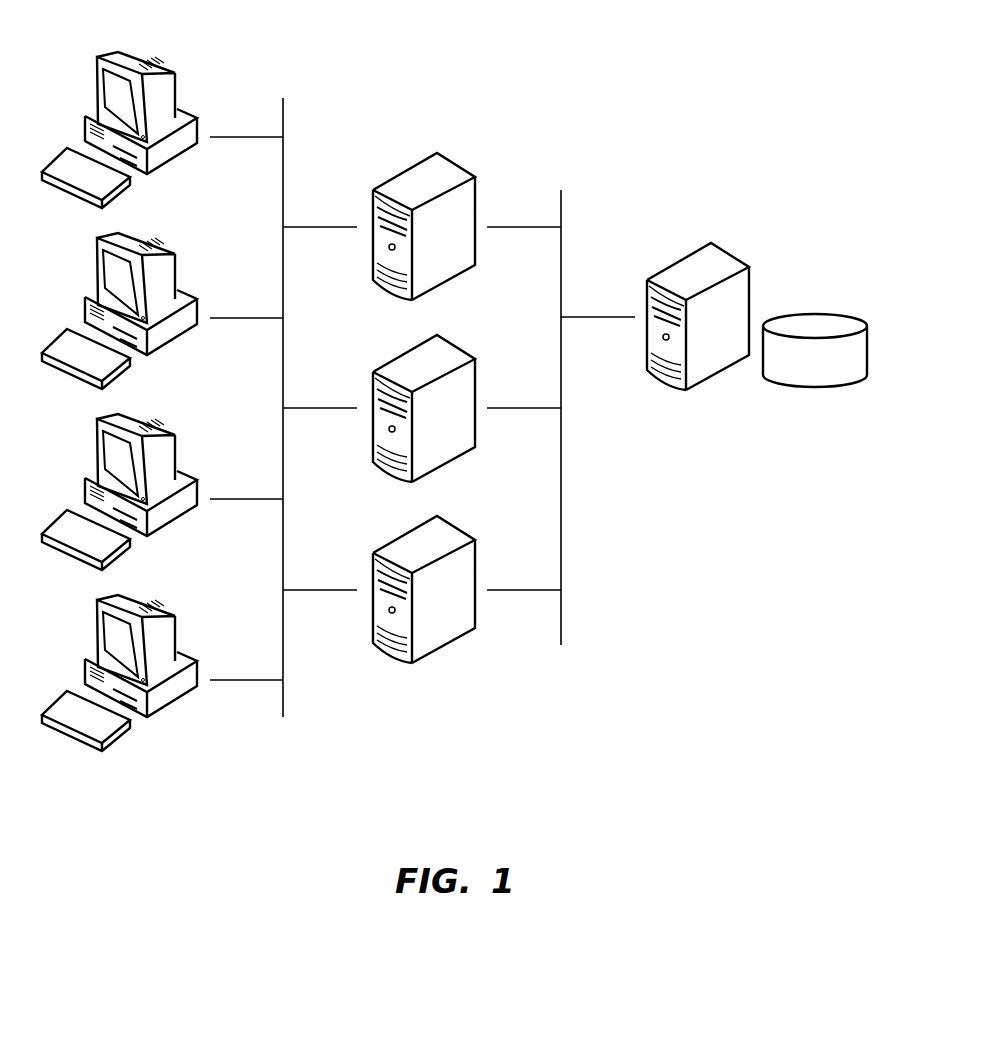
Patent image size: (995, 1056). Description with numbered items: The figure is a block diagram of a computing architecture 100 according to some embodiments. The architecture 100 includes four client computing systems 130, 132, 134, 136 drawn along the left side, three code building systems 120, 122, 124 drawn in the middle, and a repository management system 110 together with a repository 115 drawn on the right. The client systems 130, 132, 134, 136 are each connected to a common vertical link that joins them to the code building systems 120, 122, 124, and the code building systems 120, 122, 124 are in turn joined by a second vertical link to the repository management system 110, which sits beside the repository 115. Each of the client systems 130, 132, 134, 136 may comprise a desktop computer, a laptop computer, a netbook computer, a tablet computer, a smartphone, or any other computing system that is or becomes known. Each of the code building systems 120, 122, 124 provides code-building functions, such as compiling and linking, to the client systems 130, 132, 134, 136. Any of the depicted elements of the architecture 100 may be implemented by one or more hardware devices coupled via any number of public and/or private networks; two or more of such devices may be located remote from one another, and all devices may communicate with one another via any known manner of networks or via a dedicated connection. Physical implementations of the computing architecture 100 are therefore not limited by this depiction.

The computing architecture 100 is at (576, 45).
The repository management system 110 is at (717, 263).
The repository 115 is at (832, 325).
The code building system 120 is at (443, 173).
The code building system 122 is at (443, 355).
The code building system 124 is at (443, 536).
The client computing system 130 is at (183, 113).
The client computing system 132 is at (183, 294).
The client computing system 134 is at (183, 475).
The client computing system 136 is at (183, 656).